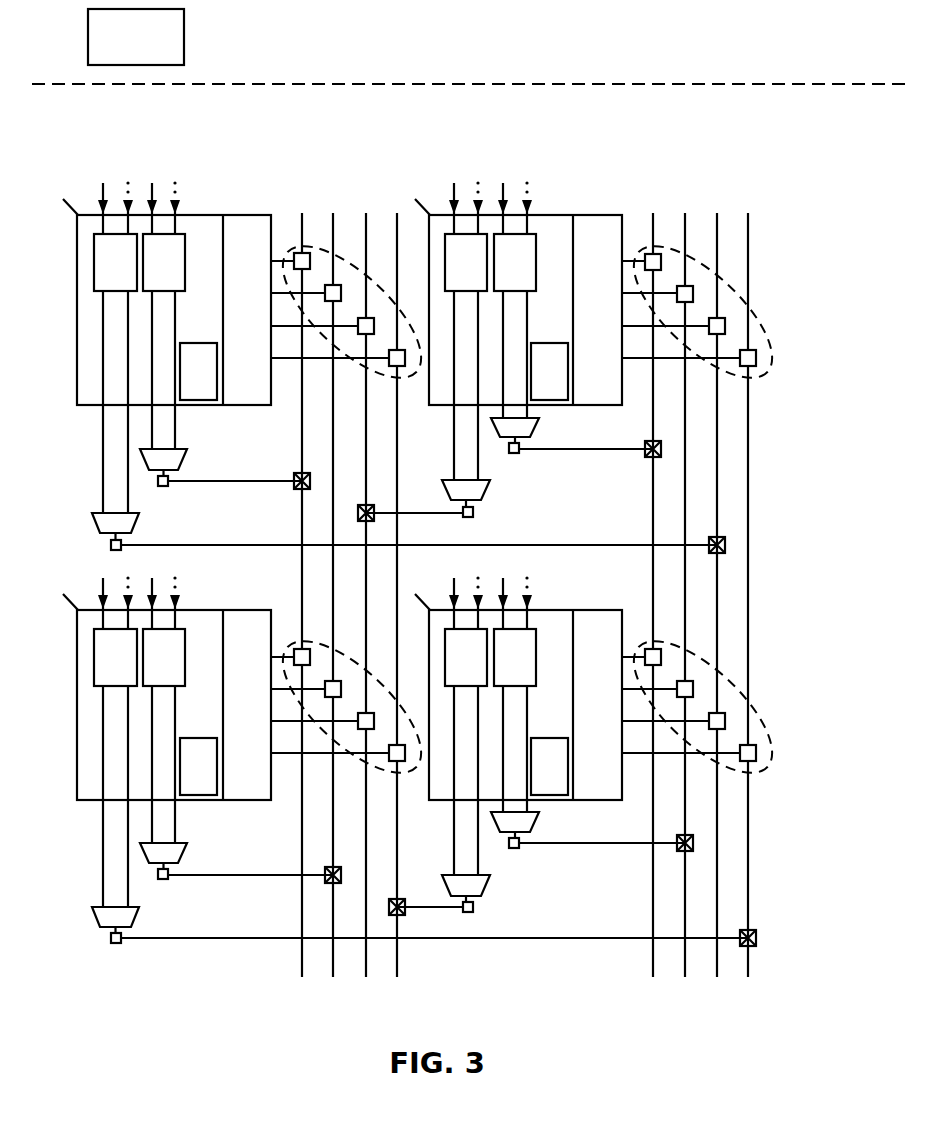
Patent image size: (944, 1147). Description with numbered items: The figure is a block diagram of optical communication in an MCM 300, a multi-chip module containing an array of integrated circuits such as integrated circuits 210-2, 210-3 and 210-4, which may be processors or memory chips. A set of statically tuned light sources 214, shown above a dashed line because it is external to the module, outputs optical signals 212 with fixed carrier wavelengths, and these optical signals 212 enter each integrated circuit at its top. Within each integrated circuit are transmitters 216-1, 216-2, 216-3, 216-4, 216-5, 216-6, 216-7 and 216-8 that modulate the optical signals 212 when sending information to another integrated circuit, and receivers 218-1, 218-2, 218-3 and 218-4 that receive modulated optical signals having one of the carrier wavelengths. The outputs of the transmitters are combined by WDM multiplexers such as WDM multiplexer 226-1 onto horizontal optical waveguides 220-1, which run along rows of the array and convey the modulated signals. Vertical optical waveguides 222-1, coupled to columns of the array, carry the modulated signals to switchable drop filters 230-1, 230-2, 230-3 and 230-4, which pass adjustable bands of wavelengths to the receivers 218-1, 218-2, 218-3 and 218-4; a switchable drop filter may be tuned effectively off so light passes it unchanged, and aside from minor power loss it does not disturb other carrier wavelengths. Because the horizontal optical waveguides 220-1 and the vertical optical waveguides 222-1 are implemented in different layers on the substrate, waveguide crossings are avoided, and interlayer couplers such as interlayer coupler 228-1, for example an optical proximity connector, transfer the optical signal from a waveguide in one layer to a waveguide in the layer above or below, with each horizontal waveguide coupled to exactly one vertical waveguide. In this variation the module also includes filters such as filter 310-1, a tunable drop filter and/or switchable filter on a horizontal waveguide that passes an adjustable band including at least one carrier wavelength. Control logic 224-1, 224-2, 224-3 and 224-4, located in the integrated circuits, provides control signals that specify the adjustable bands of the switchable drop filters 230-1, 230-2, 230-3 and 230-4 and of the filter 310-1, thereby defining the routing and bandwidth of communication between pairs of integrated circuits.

The statically tuned light sources 214 is at (136, 37).
The MCM 300 is at (696, 133).
The optical signals 212 is at (102, 170).
The optical waveguides 222-1 is at (398, 199).
The optical waveguides 220-1 is at (787, 833).
The switchable drop filters 230-1 is at (367, 290).
The switchable drop filters 230-2 is at (722, 293).
The switchable drop filters 230-3 is at (343, 738).
The switchable drop filters 230-4 is at (735, 702).
The integrated circuit 210-2 is at (553, 335).
The integrated circuit 210-3 is at (395, 750).
The integrated circuit 210-4 is at (568, 735).
The transmitter 216-1 is at (115, 262).
The transmitter 216-2 is at (164, 262).
The transmitter 216-3 is at (466, 262).
The transmitter 216-4 is at (515, 262).
The transmitter 216-5 is at (115, 657).
The transmitter 216-6 is at (164, 657).
The transmitter 216-7 is at (466, 657).
The transmitter 216-8 is at (515, 657).
The receiver 218-1 is at (311, 309).
The receiver 218-2 is at (662, 309).
The receiver 218-3 is at (311, 705).
The receiver 218-4 is at (662, 705).
The control logic 224-1 is at (198, 371).
The control logic 224-2 is at (549, 371).
The control logic 224-3 is at (198, 766).
The control logic 224-4 is at (549, 766).
The interlayer coupler 228-1 is at (295, 475).
The filter 310-1 is at (167, 485).
The WDM multiplexer 226-1 is at (522, 440).